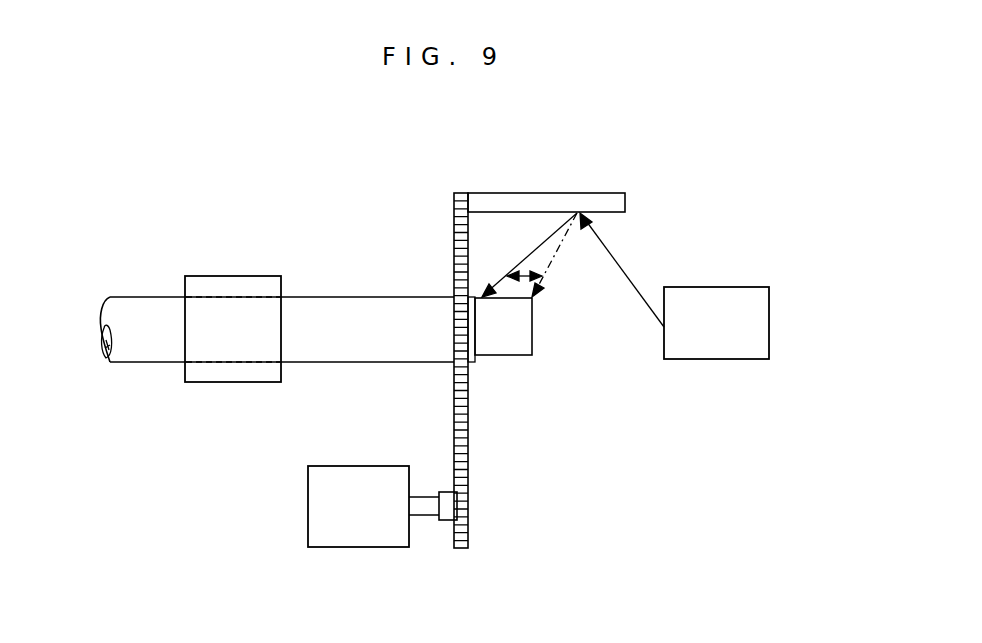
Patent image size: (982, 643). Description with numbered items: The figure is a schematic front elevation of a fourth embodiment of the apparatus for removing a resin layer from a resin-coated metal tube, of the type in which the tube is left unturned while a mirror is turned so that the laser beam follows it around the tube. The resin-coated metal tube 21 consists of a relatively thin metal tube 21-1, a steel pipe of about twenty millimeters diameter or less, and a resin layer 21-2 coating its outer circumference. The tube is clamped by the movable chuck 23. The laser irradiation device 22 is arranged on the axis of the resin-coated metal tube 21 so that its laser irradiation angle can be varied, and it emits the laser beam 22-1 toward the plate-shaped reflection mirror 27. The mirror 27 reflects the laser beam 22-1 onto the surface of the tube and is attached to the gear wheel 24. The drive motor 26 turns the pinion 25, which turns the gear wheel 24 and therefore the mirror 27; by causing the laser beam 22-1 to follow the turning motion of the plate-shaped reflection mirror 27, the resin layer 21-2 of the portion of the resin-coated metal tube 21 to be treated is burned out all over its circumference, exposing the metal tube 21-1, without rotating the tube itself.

The resin-coated metal tube 21 is at (360, 288).
The metal tube 21-1 is at (513, 355).
The resin layer 21-2 is at (143, 295).
The laser irradiation device 22 is at (748, 287).
The laser beam 22-1 is at (619, 265).
The chuck 23 is at (242, 275).
The gear wheel 24 is at (469, 413).
The pinion 25 is at (472, 510).
The drive motor 26 is at (311, 503).
The plate-shaped reflection mirror 27 is at (565, 193).